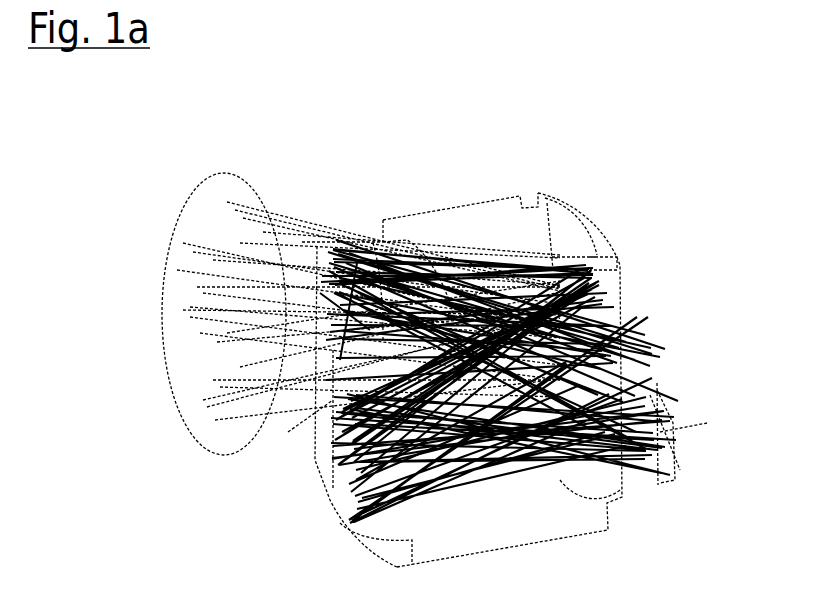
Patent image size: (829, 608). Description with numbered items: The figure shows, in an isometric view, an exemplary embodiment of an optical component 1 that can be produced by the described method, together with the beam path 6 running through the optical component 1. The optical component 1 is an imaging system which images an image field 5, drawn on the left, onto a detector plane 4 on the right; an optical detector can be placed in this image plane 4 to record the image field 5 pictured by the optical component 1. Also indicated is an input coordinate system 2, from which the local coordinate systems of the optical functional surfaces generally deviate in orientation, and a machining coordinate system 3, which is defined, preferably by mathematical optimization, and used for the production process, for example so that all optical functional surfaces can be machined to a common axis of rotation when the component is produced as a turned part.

The optical component 1 is at (540, 190).
The input coordinate system 2 is at (317, 280).
The machining coordinate system 3 is at (288, 432).
The detector plane 4 is at (680, 427).
The image field 5 is at (163, 262).
The beam path 6 is at (610, 333).